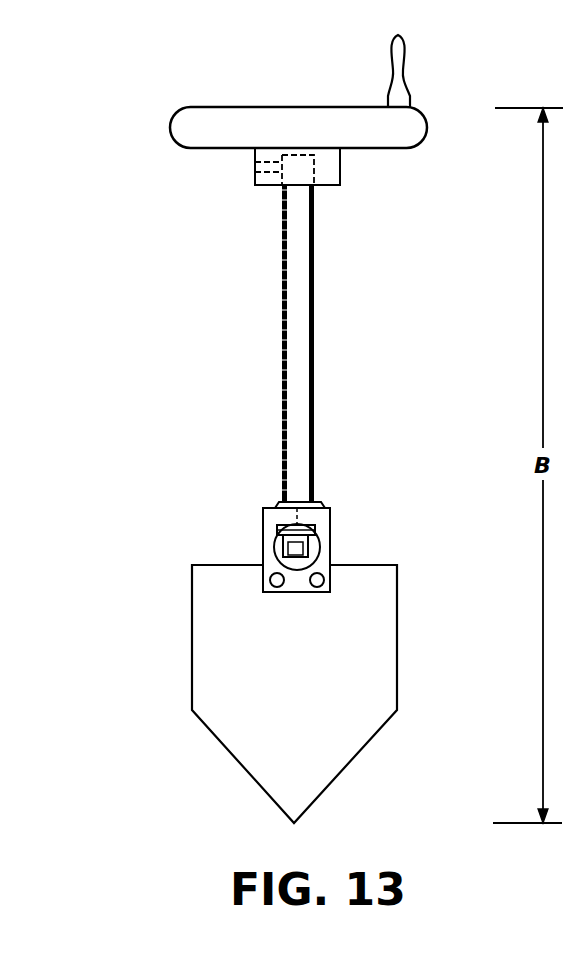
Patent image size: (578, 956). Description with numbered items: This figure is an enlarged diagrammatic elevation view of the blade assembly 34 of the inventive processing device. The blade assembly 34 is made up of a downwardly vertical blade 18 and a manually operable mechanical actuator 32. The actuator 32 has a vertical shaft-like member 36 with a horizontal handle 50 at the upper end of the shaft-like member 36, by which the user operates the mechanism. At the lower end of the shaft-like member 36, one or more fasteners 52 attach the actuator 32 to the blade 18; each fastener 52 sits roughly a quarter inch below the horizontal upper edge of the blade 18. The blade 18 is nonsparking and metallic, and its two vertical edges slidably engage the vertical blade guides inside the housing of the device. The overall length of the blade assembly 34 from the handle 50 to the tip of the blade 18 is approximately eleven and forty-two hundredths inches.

The horizontal handle 50 is at (316, 105).
The blade assembly 34 is at (322, 328).
The manually operable mechanical actuator 32 is at (317, 382).
The vertical shaft-like member 36 is at (278, 285).
The fasteners 52 is at (277, 588).
The blade 18 is at (403, 637).